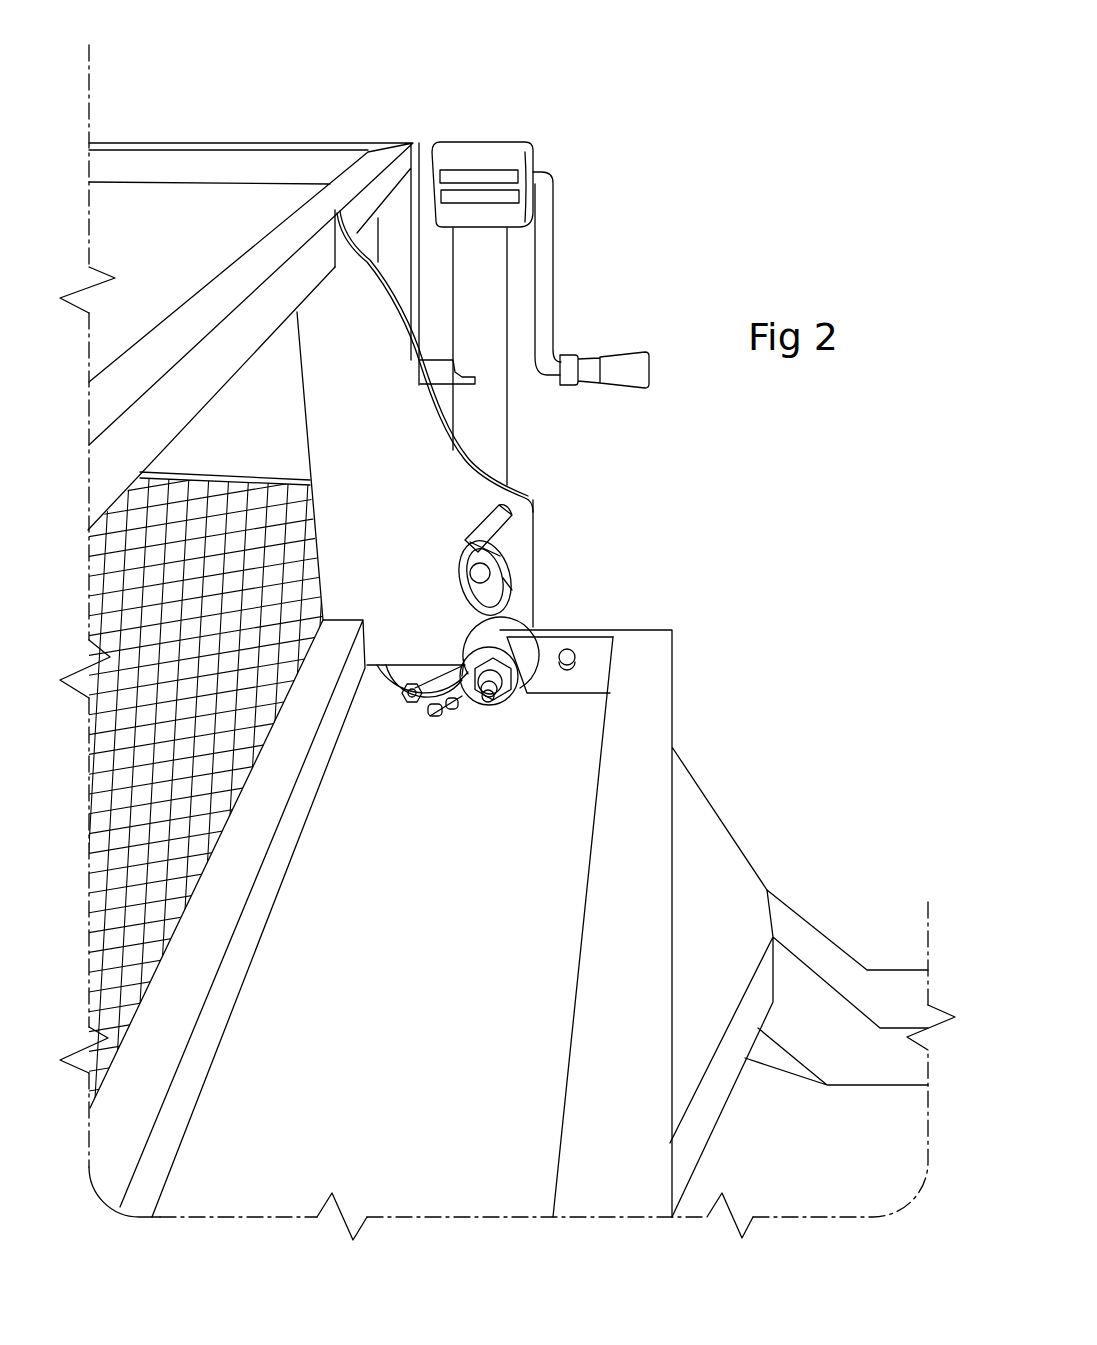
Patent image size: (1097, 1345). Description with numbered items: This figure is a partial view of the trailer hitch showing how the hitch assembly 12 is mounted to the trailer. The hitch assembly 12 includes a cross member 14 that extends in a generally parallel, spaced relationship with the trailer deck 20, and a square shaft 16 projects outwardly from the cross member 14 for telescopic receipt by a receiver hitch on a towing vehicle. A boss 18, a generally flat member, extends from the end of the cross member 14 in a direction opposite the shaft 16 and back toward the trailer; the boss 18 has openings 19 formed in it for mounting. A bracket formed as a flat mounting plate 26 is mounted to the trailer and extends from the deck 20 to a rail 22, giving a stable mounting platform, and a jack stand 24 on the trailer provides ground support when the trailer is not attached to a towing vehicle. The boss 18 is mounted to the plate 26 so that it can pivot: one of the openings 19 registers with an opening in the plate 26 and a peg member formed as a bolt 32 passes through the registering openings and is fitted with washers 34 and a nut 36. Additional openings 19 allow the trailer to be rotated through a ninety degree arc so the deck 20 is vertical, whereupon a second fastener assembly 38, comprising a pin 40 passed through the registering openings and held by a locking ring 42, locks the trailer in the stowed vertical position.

The hitch assembly 12 is at (710, 553).
The cross member 14 is at (643, 740).
The square shaft 16 is at (867, 983).
The boss 18 is at (547, 680).
The opening 19 is at (565, 653).
The trailer deck 20 is at (180, 837).
The rail 22 is at (375, 167).
The jack stand 24 is at (563, 260).
The flat mounting plate 26 is at (385, 485).
The bolt 32 is at (488, 700).
The washer 34 is at (468, 667).
The nut 36 is at (478, 690).
The second fastener assembly 38 is at (533, 492).
The pin 40 is at (492, 518).
The locking ring 42 is at (460, 582).